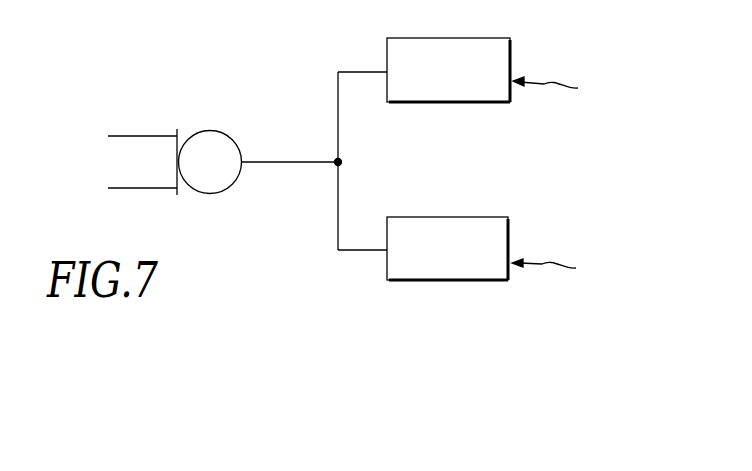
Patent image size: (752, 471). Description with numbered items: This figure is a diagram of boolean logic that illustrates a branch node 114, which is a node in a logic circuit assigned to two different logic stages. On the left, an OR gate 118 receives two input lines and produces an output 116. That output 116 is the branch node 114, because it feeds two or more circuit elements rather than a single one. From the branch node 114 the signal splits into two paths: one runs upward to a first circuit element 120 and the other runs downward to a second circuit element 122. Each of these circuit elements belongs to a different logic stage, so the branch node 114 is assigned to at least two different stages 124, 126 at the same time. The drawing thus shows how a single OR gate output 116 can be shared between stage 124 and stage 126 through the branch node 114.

The branch node 114 is at (341, 162).
The output 116 is at (296, 160).
The OR gate 118 is at (218, 191).
The circuit element 120 is at (474, 38).
The circuit element 122 is at (473, 217).
The stage 124 is at (564, 89).
The stage 126 is at (561, 269).